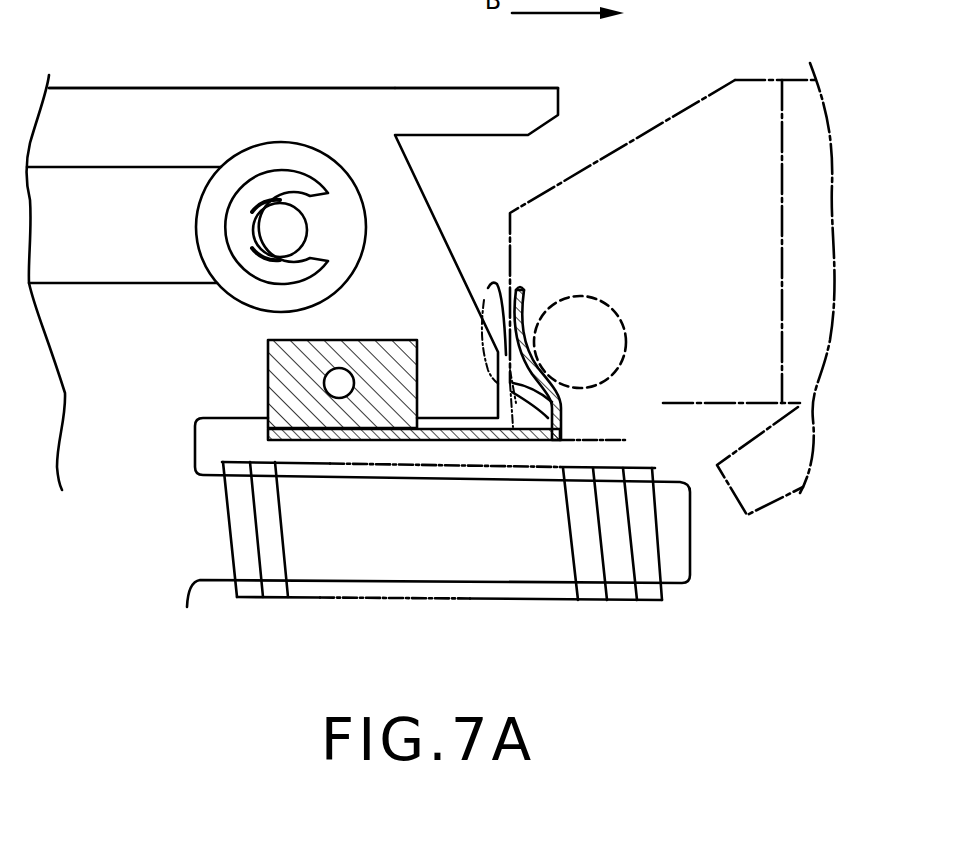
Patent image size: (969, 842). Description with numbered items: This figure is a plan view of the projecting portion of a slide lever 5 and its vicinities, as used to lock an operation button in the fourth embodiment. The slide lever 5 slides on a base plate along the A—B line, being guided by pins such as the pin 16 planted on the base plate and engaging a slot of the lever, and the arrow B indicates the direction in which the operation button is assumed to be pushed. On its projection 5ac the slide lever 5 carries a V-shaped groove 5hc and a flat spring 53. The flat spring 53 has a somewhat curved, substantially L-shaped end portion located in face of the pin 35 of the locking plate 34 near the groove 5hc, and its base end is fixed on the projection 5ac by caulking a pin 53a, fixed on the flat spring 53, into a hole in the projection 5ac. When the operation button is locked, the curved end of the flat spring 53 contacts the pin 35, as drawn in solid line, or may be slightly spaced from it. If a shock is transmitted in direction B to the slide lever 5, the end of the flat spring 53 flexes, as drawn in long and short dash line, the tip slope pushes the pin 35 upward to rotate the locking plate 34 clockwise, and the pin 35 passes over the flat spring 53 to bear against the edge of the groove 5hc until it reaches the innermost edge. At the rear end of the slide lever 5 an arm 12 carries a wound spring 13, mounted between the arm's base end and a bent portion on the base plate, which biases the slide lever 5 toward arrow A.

The slide lever 5 is at (108, 117).
The projection 5ac is at (268, 103).
The V-shaped groove 5hc is at (428, 193).
The pin 16 is at (292, 233).
The locking plate 34 is at (743, 97).
The pin 35 is at (585, 300).
The flat spring 53 is at (562, 403).
The pin 53a is at (345, 385).
The arm 12 is at (450, 563).
The spring 13 is at (663, 587).